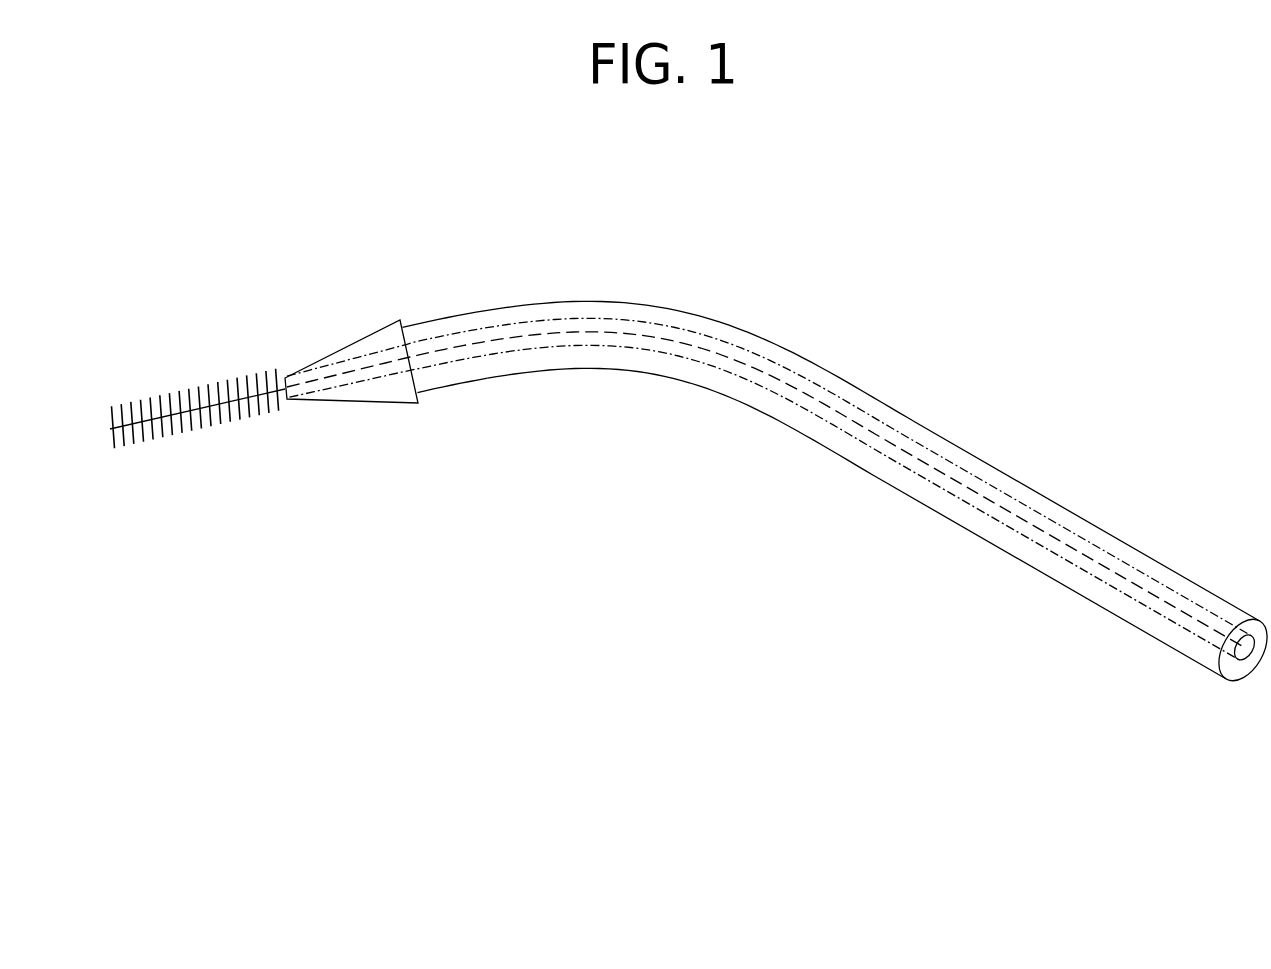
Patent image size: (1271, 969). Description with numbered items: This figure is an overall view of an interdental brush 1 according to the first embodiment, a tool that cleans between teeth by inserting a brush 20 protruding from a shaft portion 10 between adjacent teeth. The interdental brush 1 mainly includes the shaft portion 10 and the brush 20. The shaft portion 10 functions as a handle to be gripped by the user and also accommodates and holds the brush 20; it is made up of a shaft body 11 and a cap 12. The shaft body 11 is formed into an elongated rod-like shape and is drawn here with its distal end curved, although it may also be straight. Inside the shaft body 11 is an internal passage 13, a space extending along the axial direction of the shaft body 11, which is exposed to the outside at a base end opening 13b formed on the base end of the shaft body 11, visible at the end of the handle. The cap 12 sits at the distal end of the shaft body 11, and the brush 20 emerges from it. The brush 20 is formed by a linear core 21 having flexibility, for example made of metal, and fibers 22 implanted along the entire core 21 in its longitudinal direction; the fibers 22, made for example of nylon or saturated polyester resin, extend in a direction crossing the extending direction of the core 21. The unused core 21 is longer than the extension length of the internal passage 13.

The interdental brush 1 is at (905, 323).
The shaft portion 10 is at (365, 231).
The shaft body 11 is at (450, 317).
The cap 12 is at (353, 342).
The internal passage 13 is at (812, 408).
The base end opening 13b is at (1247, 657).
The brush 20 is at (217, 549).
The core 21 is at (107, 428).
The fibers 22 is at (230, 407).